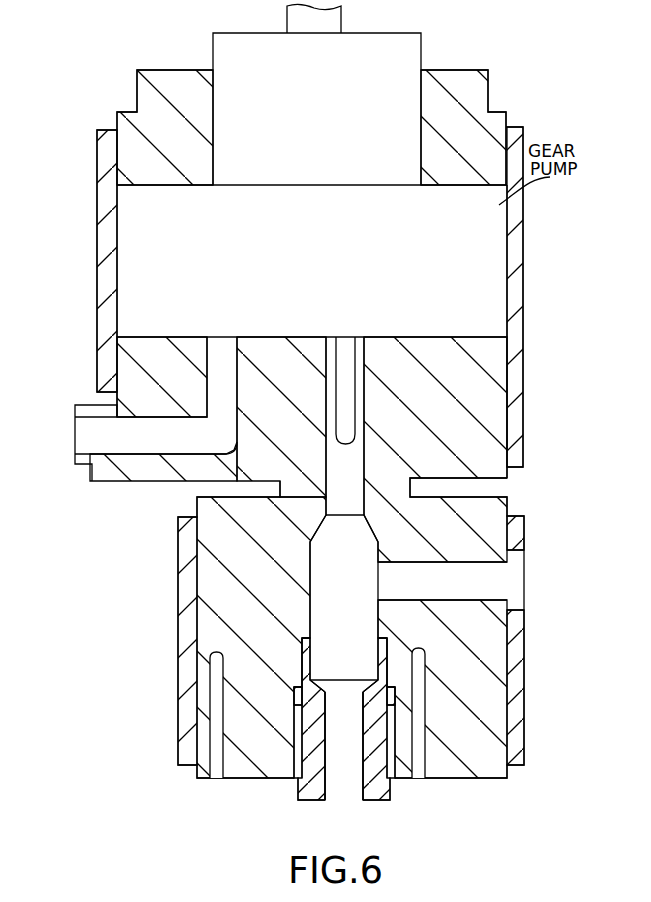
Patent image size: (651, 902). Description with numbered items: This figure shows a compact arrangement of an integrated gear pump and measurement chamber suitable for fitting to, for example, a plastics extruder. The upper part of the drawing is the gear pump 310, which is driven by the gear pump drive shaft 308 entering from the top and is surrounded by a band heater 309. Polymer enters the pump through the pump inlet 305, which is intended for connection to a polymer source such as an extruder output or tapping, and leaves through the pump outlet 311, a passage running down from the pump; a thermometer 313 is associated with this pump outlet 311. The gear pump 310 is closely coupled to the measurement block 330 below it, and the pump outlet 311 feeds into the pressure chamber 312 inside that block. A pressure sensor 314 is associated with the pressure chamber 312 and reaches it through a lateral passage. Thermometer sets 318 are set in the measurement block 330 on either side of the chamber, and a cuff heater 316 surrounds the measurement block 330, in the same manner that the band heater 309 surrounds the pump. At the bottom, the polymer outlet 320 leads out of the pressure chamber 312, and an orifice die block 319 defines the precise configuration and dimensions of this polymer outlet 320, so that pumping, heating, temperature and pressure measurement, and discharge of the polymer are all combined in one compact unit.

The pump inlet 305 is at (82, 436).
The gear pump drive shaft 308 is at (330, 14).
The band heater 309 is at (100, 228).
The gear pump 310 is at (495, 262).
The pump outlet 311 is at (366, 351).
The pressure chamber 312 is at (372, 618).
The thermometer 313 is at (350, 412).
The pressure sensor 314 is at (454, 588).
The cuff heater 316 is at (182, 550).
The thermometer sets 318 is at (221, 684).
The orifice die block 319 is at (382, 791).
The polymer outlet 320 is at (345, 793).
The measurement block 330 is at (492, 532).